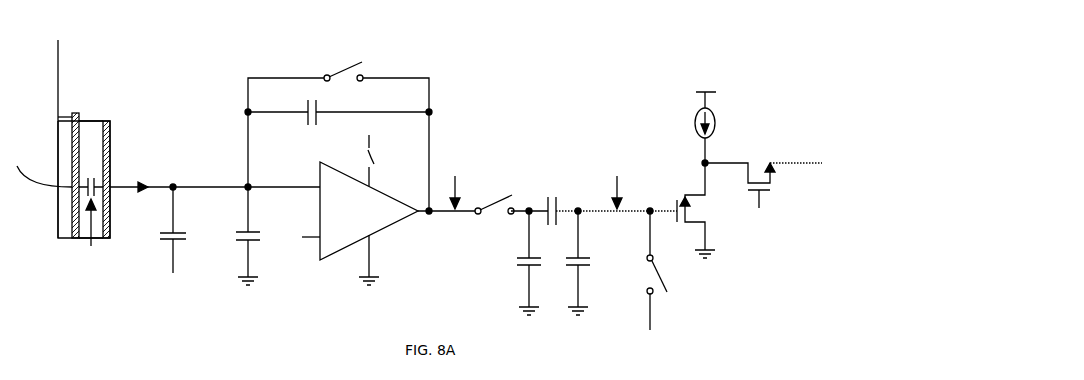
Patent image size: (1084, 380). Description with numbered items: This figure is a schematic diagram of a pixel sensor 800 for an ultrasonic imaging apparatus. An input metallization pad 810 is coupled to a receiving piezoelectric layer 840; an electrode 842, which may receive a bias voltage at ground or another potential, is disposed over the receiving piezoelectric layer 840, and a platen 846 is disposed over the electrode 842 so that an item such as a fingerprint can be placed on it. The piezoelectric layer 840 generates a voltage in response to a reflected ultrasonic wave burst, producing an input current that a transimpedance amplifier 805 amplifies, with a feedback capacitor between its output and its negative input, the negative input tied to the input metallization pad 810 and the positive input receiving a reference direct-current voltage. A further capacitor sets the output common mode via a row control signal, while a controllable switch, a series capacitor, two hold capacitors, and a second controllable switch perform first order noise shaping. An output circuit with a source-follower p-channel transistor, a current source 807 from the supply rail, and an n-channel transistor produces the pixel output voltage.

The pixel sensor 800 is at (538, 70).
The transimpedance amplifier 805 is at (385, 230).
The current source 807 is at (695, 125).
The input metallization pad 810 is at (106, 120).
The receiving piezoelectric layer 840 is at (93, 120).
The electrode 842 is at (73, 232).
The platen 846 is at (62, 232).